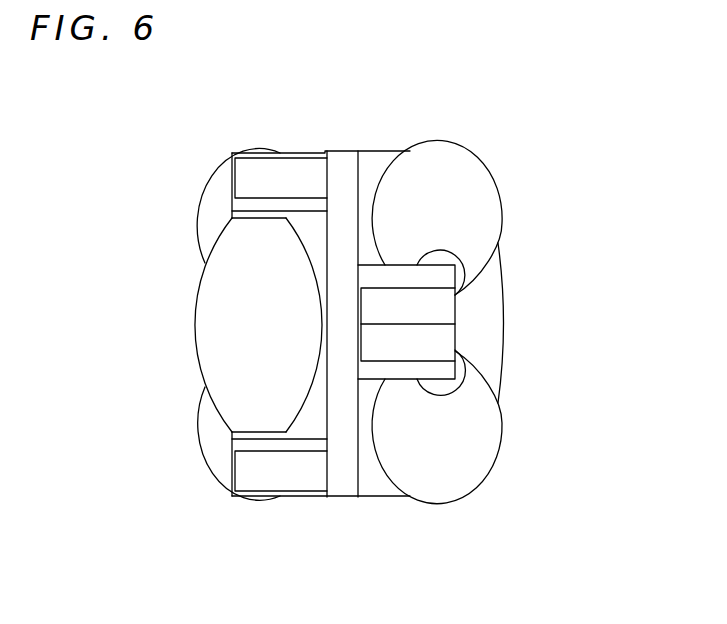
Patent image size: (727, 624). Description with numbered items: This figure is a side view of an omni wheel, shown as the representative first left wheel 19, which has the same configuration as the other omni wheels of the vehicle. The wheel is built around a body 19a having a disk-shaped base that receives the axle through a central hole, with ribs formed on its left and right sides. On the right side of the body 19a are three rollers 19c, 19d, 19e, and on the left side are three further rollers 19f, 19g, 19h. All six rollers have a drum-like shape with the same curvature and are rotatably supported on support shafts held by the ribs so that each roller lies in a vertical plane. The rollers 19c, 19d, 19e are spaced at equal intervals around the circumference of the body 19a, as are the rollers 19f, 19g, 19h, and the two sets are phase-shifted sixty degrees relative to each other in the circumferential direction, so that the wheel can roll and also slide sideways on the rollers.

The first left wheel 19 is at (519, 116).
The body 19a is at (342, 497).
The roller 19c is at (498, 318).
The roller 19d is at (503, 226).
The roller 19e is at (499, 447).
The roller 19f is at (196, 328).
The roller 19g is at (196, 215).
The roller 19h is at (198, 453).